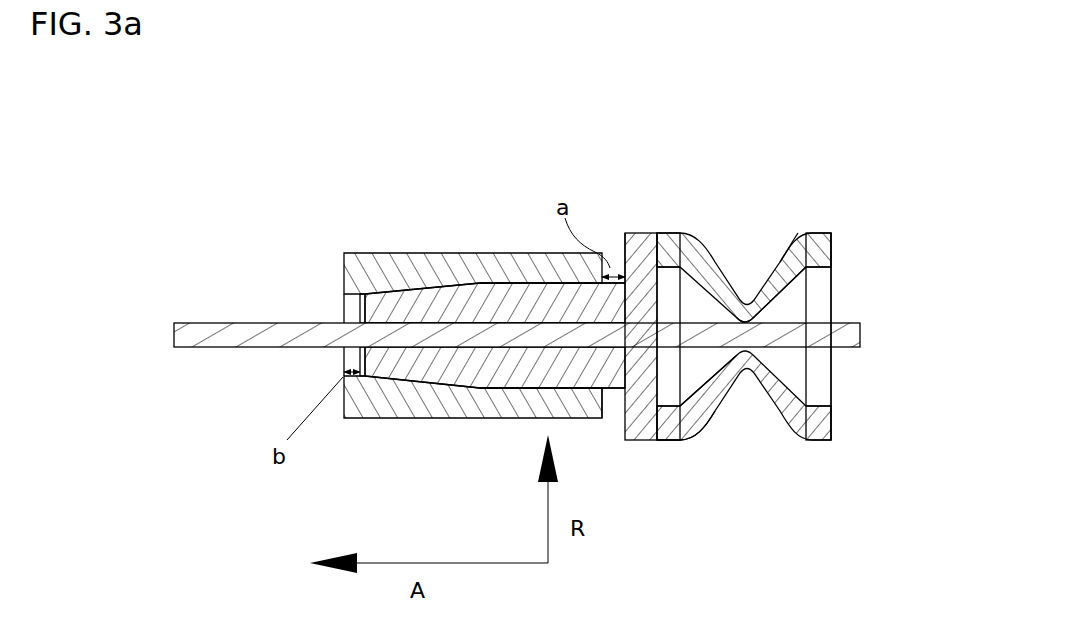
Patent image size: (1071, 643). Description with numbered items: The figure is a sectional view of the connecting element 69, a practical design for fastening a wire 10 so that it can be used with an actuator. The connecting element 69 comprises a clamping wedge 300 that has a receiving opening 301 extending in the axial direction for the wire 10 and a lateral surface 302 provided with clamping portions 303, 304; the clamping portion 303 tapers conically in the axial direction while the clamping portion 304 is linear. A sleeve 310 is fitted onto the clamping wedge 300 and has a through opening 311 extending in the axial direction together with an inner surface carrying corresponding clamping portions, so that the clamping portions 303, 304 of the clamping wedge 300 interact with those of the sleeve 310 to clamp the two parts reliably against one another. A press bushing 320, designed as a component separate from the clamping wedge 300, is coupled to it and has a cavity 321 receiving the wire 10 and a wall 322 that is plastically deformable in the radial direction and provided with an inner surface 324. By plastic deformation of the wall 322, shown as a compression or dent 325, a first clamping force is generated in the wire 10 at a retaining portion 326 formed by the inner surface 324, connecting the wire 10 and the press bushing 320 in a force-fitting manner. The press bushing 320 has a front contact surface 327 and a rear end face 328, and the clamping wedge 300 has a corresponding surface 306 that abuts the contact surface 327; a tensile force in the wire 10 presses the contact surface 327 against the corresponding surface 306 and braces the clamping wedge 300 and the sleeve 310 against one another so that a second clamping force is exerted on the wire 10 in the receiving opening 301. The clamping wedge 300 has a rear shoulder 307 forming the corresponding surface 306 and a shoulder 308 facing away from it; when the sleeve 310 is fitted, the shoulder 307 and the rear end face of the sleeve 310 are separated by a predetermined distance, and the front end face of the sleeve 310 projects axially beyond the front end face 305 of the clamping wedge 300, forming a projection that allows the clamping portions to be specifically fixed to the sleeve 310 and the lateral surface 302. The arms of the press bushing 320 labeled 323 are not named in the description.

The connecting element 69 is at (226, 213).
The wire 10 is at (248, 338).
The clamping wedge 300 is at (503, 400).
The receiving opening 301 is at (435, 300).
The lateral surface 302 is at (612, 392).
The clamping portion 303 is at (432, 253).
The linear clamping portion 304 is at (497, 290).
The front end face 305 is at (360, 308).
The corresponding surface 306 is at (662, 237).
The rear shoulder 307 is at (623, 245).
The shoulder 308 is at (617, 227).
The sleeve 310 is at (388, 251).
The through opening 311 is at (342, 360).
The press bushing 320 is at (816, 228).
The cavity 321 is at (738, 410).
The wall 322 is at (810, 433).
The upper arm 323 is at (792, 235).
The inner surface 324 is at (808, 283).
The compression or dent 325 is at (767, 385).
The retaining portion 326 is at (744, 318).
The front contact surface 327 is at (642, 405).
The rear end face 328 is at (832, 422).